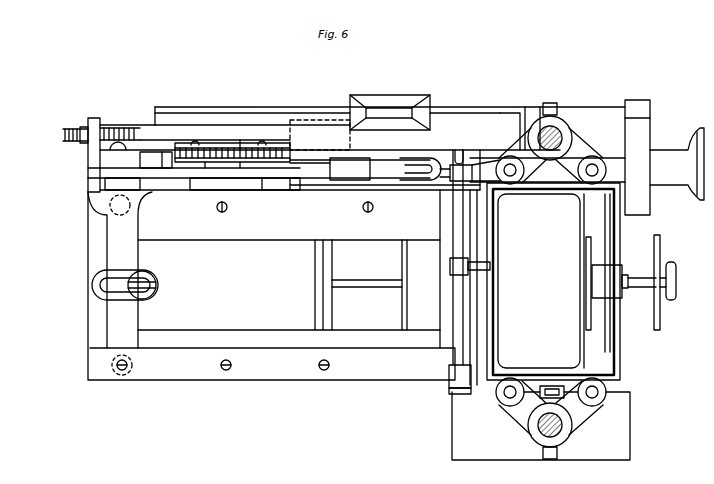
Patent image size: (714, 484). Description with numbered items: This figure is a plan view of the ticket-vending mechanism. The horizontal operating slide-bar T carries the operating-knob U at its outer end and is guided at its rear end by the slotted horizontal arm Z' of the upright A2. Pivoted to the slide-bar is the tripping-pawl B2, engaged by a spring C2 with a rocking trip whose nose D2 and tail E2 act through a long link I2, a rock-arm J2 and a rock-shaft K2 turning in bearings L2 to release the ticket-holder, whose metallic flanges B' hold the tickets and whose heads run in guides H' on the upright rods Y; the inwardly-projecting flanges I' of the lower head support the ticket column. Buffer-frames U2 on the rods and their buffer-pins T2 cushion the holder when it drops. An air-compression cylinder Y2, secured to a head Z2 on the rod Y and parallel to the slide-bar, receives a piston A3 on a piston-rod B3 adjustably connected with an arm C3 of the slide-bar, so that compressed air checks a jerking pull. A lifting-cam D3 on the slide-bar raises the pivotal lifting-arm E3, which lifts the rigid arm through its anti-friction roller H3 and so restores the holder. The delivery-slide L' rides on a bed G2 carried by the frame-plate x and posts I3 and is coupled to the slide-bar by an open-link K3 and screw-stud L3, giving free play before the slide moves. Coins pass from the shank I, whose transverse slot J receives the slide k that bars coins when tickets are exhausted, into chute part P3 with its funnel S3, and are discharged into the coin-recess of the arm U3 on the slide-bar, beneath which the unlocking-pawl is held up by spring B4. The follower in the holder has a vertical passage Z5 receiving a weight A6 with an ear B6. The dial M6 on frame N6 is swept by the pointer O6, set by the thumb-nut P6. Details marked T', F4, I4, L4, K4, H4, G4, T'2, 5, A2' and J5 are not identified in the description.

The coin-chute part P3 is at (270, 110).
The funnel S3 is at (390, 112).
The arm C3 is at (94, 120).
The screw T' is at (72, 153).
The inwardly-projecting flange I' is at (121, 115).
The horizontal arm Z' is at (119, 153).
The block F4 is at (151, 154).
The bracket I4 is at (170, 154).
The arm U3 is at (232, 150).
The lugs L4 is at (235, 134).
The piston-rod B3 is at (249, 136).
The pin K4 is at (207, 166).
The pin H4 is at (237, 166).
The block G4 is at (135, 183).
The tripping-pawl B2 is at (208, 191).
The spring C2 is at (262, 190).
The nose D2 is at (290, 190).
The piston A3 is at (320, 135).
The operating slide-bar T is at (360, 184).
The buffer-pins T2 is at (356, 180).
The lifting-cam D3 is at (350, 169).
The anti-friction roller H3 is at (456, 173).
The tail E2 is at (460, 156).
The pivotal lifting-arm E3 is at (486, 166).
The air-compression cylinder Y2 is at (459, 124).
The head Z2 is at (520, 128).
The upright rods Y is at (562, 138).
The buffer-frames U2 is at (585, 158).
The eye / rod T'2 is at (547, 276).
The frame-plate x is at (600, 112).
The plate 5 is at (637, 157).
The operating-knob U is at (677, 164).
The transverse slot J is at (271, 286).
The delivery-slide L' is at (289, 289).
The bed G2 is at (223, 285).
The long link I2 is at (132, 364).
The posts I3 is at (130, 206).
The screw-stud L3 is at (156, 280).
The open-link K3 is at (128, 299).
The spring B4 is at (361, 285).
The rock-shaft K2 is at (453, 200).
The bearings L2 is at (467, 388).
The rock-arm J2 is at (474, 268).
The upright A2 is at (440, 288).
The metallic flanges B' is at (553, 281).
The arm A2' is at (509, 238).
The chamber J5 is at (536, 256).
The weight A6 is at (595, 289).
The vertical passage Z5 is at (586, 284).
The ear B6 is at (624, 281).
The pointer O6 is at (661, 250).
The thumb-nut P6 is at (677, 283).
The dial M6 is at (661, 320).
The frame N6 is at (658, 331).
The slide k is at (548, 386).
The hollow flattened shank I is at (541, 426).
The guides H' is at (589, 414).